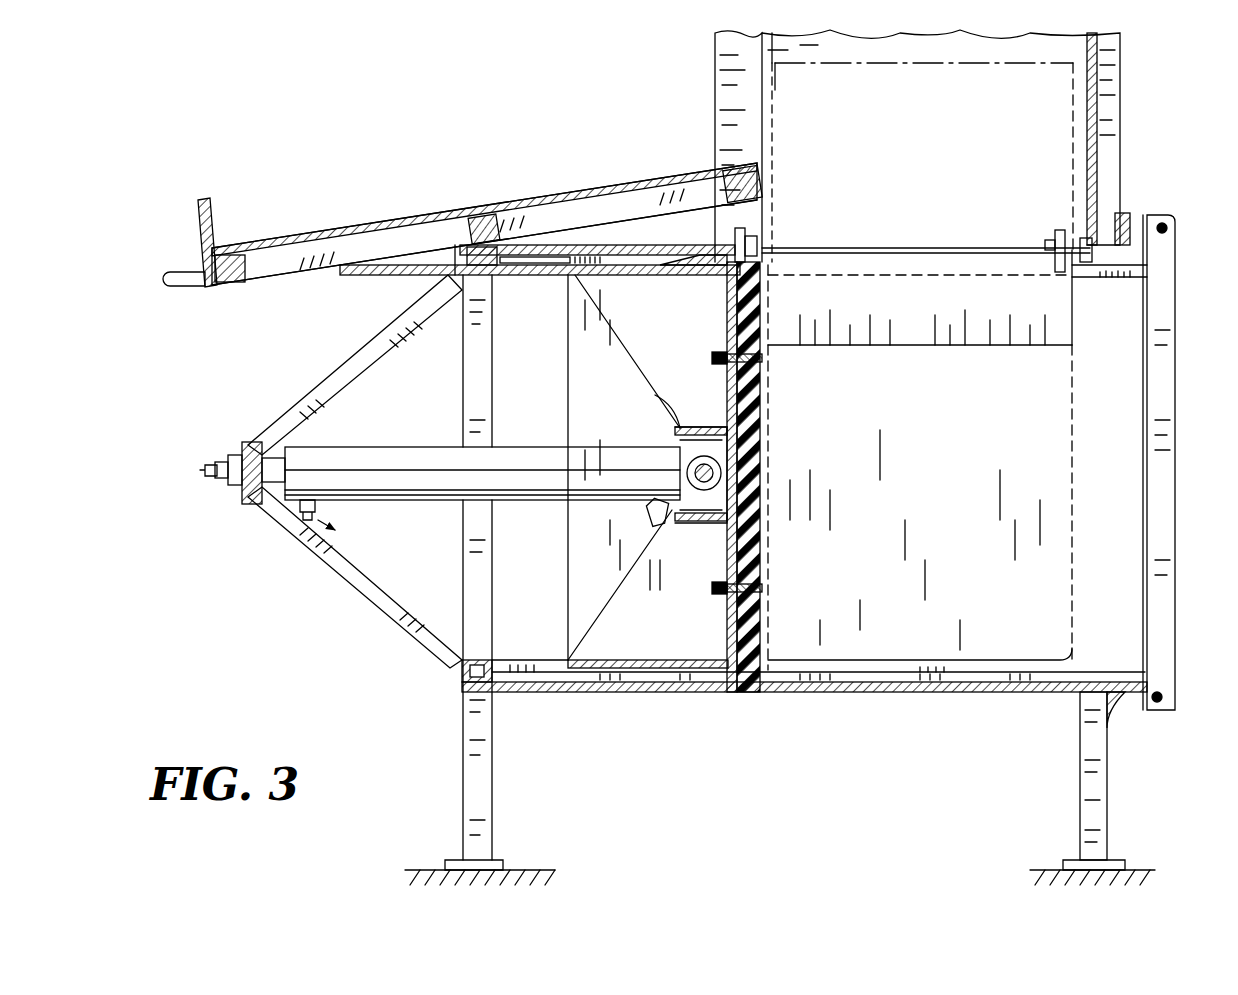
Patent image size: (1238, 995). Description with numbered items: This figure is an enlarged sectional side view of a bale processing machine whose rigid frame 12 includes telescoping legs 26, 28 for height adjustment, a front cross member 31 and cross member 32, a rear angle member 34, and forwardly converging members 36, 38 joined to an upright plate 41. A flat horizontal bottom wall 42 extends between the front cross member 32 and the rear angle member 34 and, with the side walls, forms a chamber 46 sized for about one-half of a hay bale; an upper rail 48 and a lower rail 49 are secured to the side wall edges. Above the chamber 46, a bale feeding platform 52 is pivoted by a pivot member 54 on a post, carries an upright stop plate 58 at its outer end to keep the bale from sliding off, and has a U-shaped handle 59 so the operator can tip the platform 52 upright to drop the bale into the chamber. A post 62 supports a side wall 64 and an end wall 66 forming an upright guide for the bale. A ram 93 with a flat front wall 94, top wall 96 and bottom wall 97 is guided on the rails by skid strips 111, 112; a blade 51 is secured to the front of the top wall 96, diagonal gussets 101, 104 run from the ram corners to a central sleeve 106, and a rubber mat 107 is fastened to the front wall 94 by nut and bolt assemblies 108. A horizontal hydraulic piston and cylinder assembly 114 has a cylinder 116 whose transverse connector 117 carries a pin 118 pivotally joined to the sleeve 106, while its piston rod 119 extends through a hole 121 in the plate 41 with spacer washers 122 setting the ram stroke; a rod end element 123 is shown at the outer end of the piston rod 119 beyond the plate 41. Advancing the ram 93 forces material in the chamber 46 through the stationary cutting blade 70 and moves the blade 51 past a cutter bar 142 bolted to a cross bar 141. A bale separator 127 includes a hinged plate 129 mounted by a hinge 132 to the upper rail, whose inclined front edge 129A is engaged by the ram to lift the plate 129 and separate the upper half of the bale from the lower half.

The frame 12 is at (385, 628).
The leg 26 is at (478, 773).
The leg 28 is at (1098, 807).
The cross member 31 is at (455, 295).
The cross member 32 is at (462, 680).
The angle member 34 is at (1112, 718).
The forwardly converging member 36 is at (362, 335).
The forwardly converging member 38 is at (358, 618).
The upright plate 41 is at (242, 450).
The bottom wall 42 is at (868, 693).
The chamber 46 is at (947, 486).
The upper rail 48 is at (630, 245).
The lower rail 49 is at (975, 672).
The blade 51 is at (686, 266).
The platform 52 is at (597, 182).
The pivot member 54 is at (762, 186).
The stop plate 58 is at (198, 210).
The handle 59 is at (175, 287).
The post 62 is at (1122, 58).
The side wall 64 is at (715, 57).
The end wall 66 is at (1097, 110).
The cutting blade 70 is at (1176, 290).
The ram 93 is at (628, 630).
The front wall 94 is at (727, 327).
The top wall 96 is at (522, 276).
The bottom wall 97 is at (660, 660).
The diagonal gusset 101 is at (640, 357).
The diagonal gusset 104 is at (640, 528).
The sleeve 106 is at (656, 394).
The rubber mat 107 is at (760, 398).
The nut and bolt assembly 108 is at (762, 589).
The skid strip 111 is at (666, 676).
The skid strip 112 is at (625, 266).
The piston and cylinder assembly 114 is at (385, 462).
The cylinder 116 is at (495, 446).
The transverse connector 117 is at (700, 428).
The pin 118 is at (695, 522).
The piston rod 119 is at (282, 448).
The hole 121 is at (238, 492).
The spacer washer 122 is at (262, 505).
The rod end fitting 123 is at (213, 464).
The bale separator 127 is at (912, 348).
The plate 129 is at (985, 348).
The front edge 129A is at (762, 358).
The hinge 132 is at (762, 238).
The cross bar 141 is at (1122, 213).
The cutter bar 142 is at (1082, 270).